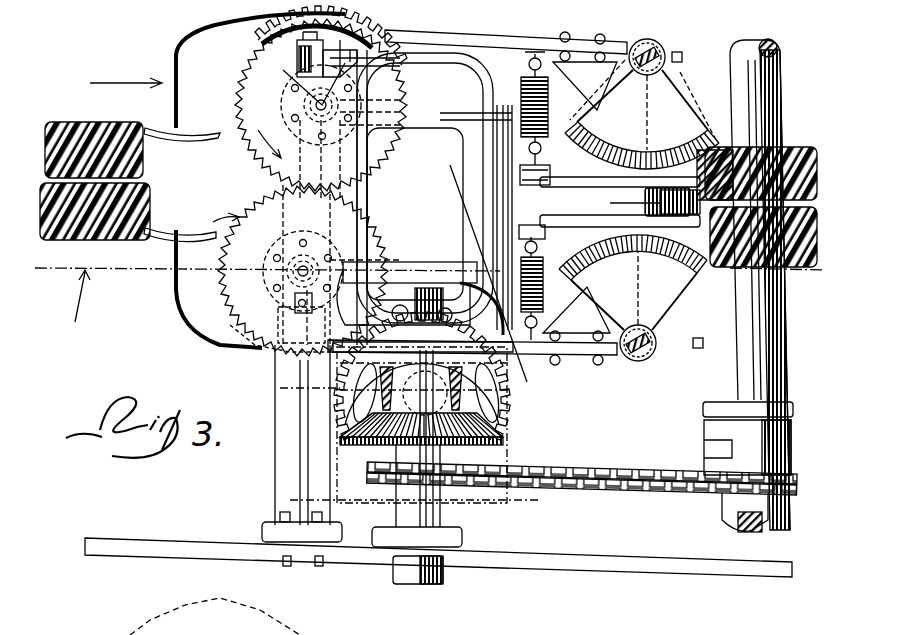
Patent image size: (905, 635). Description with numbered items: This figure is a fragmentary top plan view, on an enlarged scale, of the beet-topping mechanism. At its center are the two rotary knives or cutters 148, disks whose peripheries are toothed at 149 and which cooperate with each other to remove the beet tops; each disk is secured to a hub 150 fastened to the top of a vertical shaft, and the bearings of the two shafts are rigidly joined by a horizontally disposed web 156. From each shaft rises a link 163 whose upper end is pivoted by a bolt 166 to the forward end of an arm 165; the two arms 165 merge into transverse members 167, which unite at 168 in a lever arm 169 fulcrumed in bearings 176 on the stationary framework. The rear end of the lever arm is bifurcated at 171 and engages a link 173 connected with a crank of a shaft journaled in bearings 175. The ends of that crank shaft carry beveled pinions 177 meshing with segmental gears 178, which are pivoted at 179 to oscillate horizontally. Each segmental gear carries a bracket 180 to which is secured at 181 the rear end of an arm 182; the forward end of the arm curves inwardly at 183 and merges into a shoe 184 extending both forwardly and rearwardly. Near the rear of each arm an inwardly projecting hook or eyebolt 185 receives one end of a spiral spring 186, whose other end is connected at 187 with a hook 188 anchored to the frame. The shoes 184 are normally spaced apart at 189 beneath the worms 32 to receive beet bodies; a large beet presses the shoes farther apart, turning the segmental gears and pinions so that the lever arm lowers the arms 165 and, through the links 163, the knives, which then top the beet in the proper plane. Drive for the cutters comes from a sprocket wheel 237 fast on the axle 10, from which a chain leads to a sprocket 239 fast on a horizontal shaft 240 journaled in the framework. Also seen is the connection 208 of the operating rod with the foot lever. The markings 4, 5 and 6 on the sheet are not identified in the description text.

The section line 4- 4 is at (430, 295).
The view arrow 5 is at (126, 74).
The base plate 6 is at (530, 566).
The axle 10 is at (778, 362).
The worms 32 is at (429, 181).
The rotary knives or cutters 148 is at (240, 80).
The toothed periphery 149 is at (240, 103).
The hub 150 is at (322, 201).
The web 156 is at (253, 162).
The link 163 is at (297, 62).
The arm 165 is at (330, 350).
The bolt 166 is at (395, 20).
The transverse members 167 is at (480, 143).
The junction 168 is at (462, 165).
The lever arm 169 is at (550, 248).
The bifurcated rear extremity 171 is at (600, 215).
The link 173 is at (655, 200).
The bearings 175 is at (690, 122).
The bearings 176 is at (578, 178).
The beveled pinions 177 is at (660, 140).
The segmental gears 178 is at (712, 133).
The pivot 179 is at (660, 45).
The bracket 180 is at (580, 197).
The securing point 181 is at (580, 196).
The arm 182 is at (455, 35).
The inwardly curved portion 183 is at (178, 48).
The shoe 184 is at (190, 138).
The hook or eyebolt 185 is at (529, 62).
The spiral spring 186 is at (520, 90).
The spring connection 187 is at (540, 150).
The hook 188 is at (548, 203).
The spacing 189 is at (209, 199).
The connection 208 is at (582, 485).
The sprocket wheel 237 is at (718, 500).
The sprocket 239 is at (455, 480).
The horizontal shaft 240 is at (422, 585).